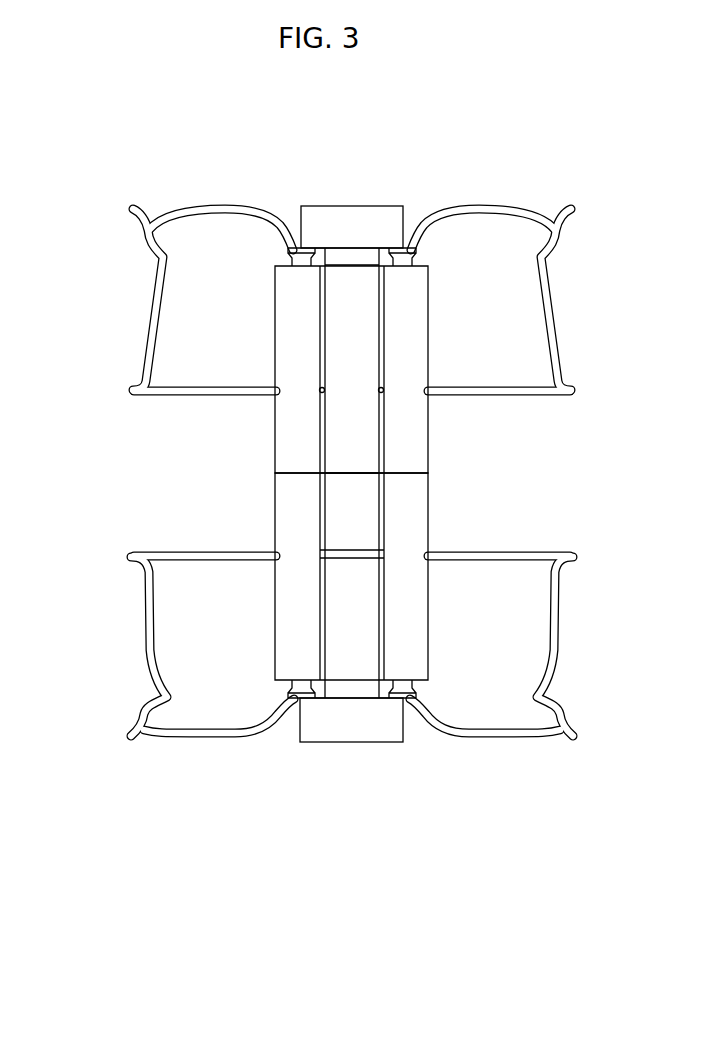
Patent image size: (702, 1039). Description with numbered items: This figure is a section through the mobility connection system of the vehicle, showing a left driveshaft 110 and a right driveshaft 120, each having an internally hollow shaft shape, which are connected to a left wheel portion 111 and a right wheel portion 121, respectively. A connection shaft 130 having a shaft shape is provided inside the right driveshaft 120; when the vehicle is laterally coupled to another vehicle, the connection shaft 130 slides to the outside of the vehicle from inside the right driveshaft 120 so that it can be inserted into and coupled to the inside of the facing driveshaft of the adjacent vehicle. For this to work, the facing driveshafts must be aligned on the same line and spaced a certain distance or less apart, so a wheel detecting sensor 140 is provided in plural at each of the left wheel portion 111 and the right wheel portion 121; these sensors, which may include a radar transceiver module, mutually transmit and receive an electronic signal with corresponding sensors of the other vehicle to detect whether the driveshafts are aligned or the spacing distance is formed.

The left driveshaft 110 is at (293, 593).
The left wheel portion 111 is at (197, 666).
The right driveshaft 120 is at (300, 433).
The right wheel portion 121 is at (200, 283).
The connection shaft 130 is at (365, 438).
The wheel detecting sensor 140 is at (367, 195).